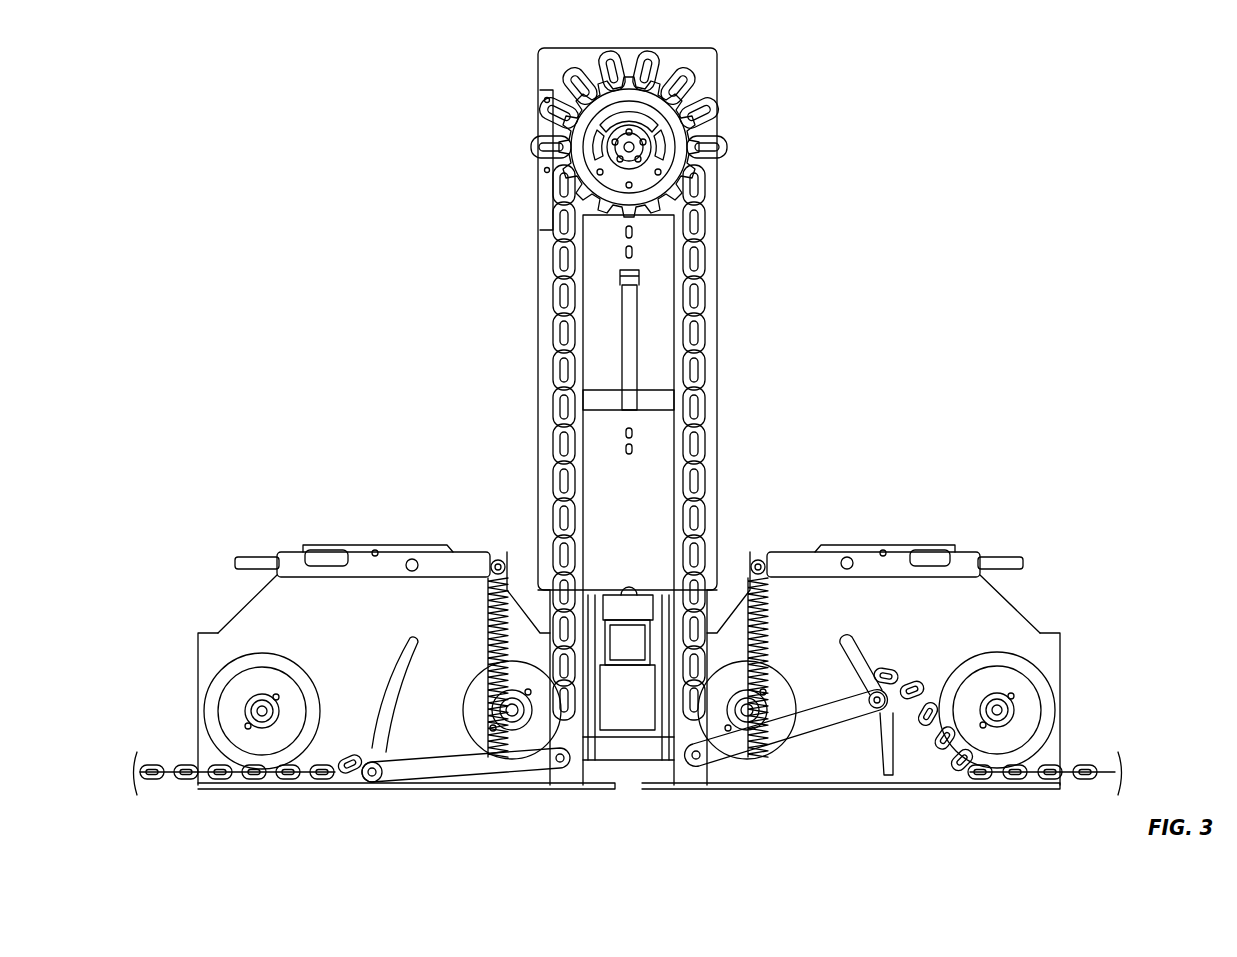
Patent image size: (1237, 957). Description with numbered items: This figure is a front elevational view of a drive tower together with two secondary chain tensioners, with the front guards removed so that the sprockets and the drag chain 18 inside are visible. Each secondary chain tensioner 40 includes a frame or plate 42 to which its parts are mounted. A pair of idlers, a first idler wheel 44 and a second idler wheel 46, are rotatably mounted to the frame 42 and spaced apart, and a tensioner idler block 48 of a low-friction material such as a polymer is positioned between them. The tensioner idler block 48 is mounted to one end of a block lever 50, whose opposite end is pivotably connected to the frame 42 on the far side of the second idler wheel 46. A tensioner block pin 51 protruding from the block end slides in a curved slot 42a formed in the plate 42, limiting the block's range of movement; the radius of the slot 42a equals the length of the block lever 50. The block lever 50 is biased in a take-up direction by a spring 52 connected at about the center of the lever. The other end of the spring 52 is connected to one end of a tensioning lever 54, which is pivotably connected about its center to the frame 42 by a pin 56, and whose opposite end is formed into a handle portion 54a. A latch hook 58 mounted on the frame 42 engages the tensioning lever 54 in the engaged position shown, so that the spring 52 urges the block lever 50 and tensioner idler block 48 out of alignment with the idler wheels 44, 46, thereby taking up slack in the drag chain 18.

The drag chain 18 is at (176, 780).
The secondary chain tensioner 40 is at (247, 630).
The frame or plate 42 is at (208, 657).
The curved slot 42a is at (398, 786).
The first idler wheel 44 is at (255, 711).
The second idler wheel 46 is at (517, 786).
The tensioner idler block 48 is at (340, 784).
The block lever 50 is at (447, 786).
The tensioner block pin 51 is at (372, 786).
The spring 52 is at (503, 580).
The tensioning lever 54 is at (465, 565).
The handle portion 54a is at (247, 560).
The pin 56 is at (410, 559).
The latch hook 58 is at (327, 555).